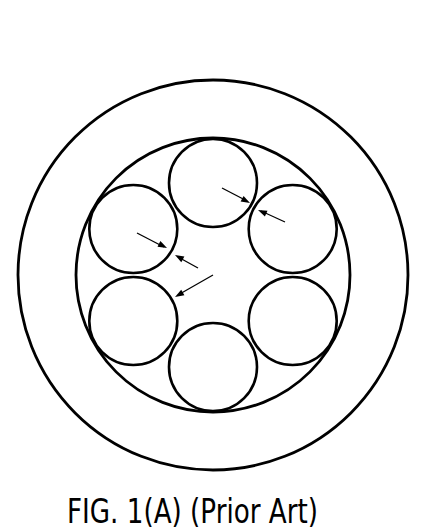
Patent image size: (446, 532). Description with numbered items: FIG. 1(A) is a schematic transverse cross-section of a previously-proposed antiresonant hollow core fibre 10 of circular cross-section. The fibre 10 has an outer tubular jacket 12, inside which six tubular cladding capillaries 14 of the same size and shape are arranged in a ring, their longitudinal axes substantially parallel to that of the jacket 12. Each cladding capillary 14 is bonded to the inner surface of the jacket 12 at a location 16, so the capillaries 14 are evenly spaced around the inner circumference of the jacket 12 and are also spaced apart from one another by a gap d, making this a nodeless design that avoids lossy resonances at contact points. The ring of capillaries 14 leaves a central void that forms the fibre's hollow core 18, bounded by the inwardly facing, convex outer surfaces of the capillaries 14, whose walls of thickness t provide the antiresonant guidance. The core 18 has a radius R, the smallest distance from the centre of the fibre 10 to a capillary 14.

The fibre 10 is at (84, 81).
The outer tubular jacket 12 is at (316, 440).
The cladding capillary 14 is at (256, 167).
The contact location 16 is at (212, 136).
The hollow core 18 is at (242, 262).